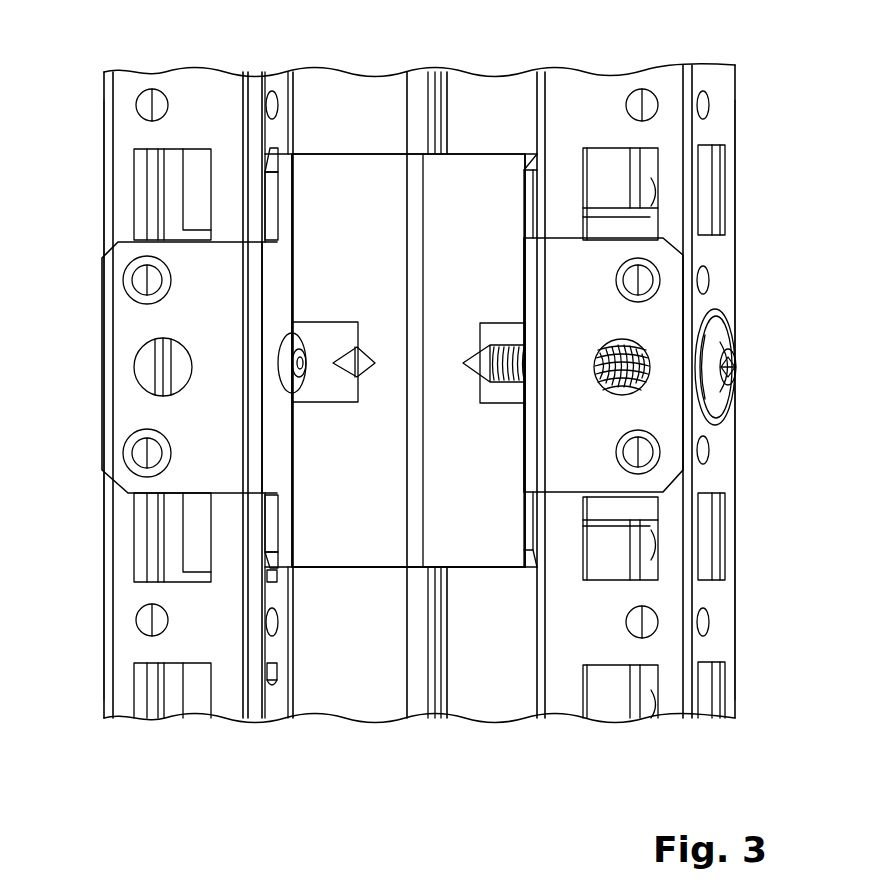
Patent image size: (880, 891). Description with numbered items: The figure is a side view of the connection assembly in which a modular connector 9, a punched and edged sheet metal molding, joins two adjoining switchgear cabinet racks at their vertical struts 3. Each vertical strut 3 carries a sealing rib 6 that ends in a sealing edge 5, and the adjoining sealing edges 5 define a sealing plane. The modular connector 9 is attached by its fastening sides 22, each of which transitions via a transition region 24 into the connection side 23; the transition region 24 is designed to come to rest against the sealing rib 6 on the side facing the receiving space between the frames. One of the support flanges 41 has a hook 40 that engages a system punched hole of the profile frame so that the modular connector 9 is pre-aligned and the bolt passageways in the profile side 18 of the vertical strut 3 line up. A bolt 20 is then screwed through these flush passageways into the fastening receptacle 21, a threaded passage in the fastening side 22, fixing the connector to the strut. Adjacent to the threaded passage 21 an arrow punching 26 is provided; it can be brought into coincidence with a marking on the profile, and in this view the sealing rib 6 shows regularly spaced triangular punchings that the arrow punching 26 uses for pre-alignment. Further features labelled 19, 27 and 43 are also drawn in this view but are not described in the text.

The vertical strut 3 is at (215, 95).
The sealing edge 5 is at (418, 92).
The sealing rib 6 is at (335, 92).
The modular connector 9 is at (475, 149).
The profile side 18 is at (720, 113).
The slot / opening 19 is at (608, 178).
The bolt 20 is at (714, 366).
The fastening receptacle 21 is at (303, 388).
The fastening side 22 is at (282, 90).
The connection side 23 is at (380, 568).
The transition region 24 is at (296, 568).
The arrow punching 26 is at (368, 348).
The screw 27 is at (478, 370).
The hook 40 is at (593, 232).
The support flange 41 is at (125, 413).
The pointer element 43 is at (350, 372).